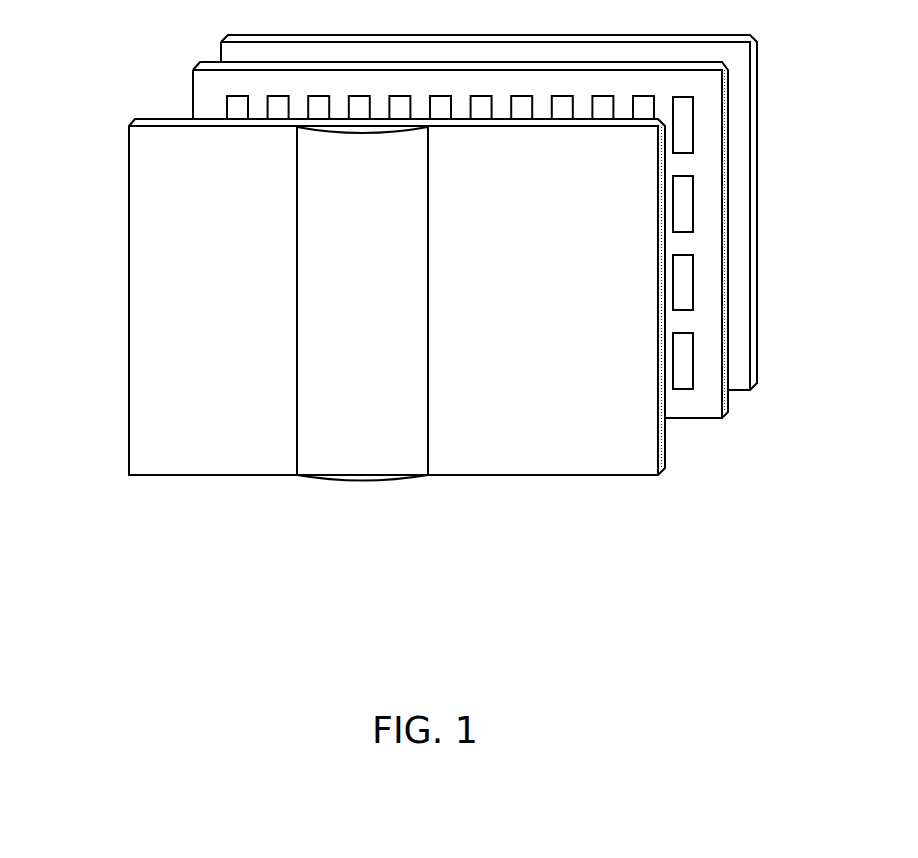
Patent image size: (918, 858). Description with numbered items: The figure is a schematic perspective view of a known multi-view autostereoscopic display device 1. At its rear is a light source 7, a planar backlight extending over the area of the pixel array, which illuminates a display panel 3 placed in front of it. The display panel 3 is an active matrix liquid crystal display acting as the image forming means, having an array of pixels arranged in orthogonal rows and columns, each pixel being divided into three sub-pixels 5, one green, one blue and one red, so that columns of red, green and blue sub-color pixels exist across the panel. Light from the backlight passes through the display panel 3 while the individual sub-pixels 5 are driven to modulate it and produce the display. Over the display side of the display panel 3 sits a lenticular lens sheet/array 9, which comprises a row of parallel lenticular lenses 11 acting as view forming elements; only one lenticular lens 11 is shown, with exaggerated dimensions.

The autostereoscopic display device 1 is at (134, 61).
The display panel 3 is at (723, 405).
The sub-pixels 5 is at (682, 117).
The light source 7 is at (758, 366).
The lenticular lens sheet/array 9 is at (666, 463).
The lenticular lenses 11 is at (360, 463).